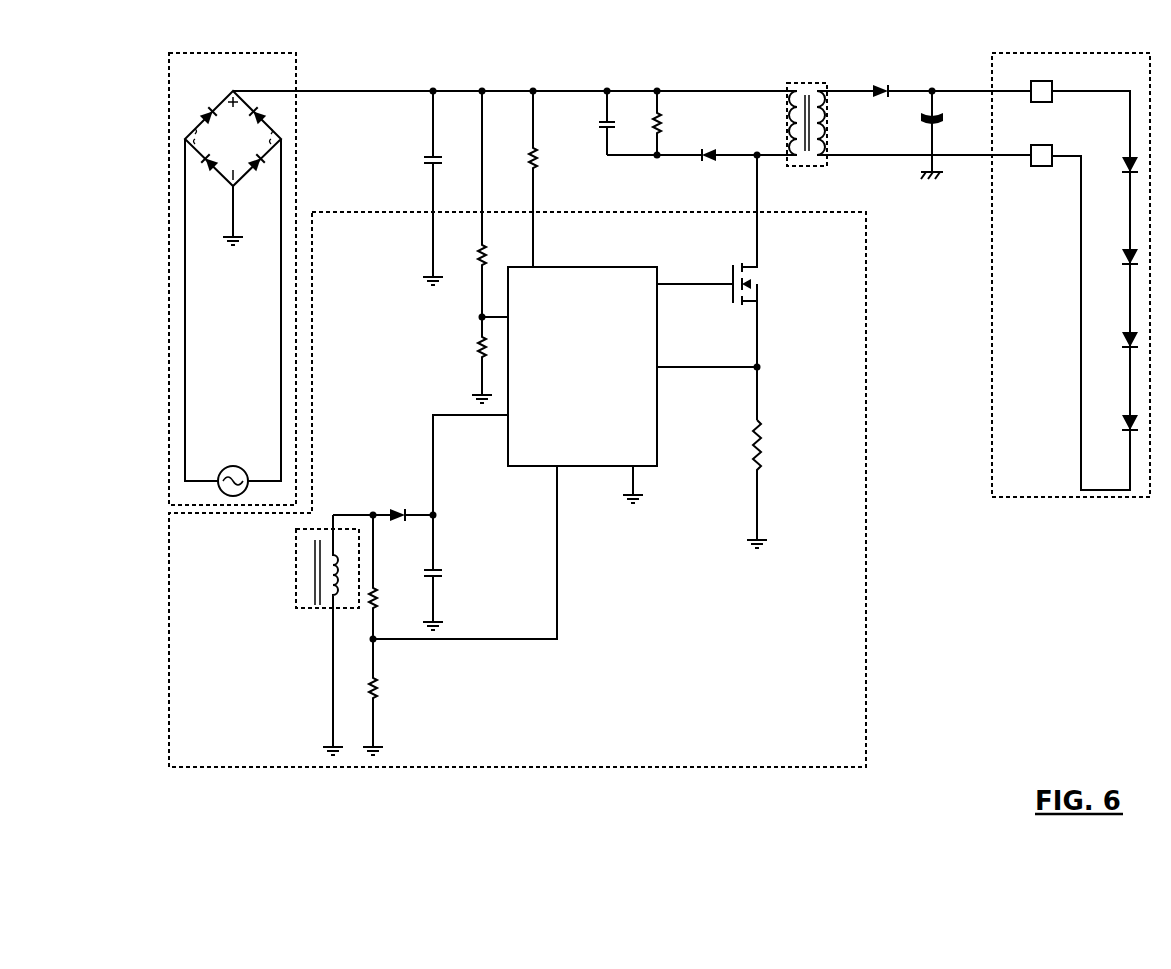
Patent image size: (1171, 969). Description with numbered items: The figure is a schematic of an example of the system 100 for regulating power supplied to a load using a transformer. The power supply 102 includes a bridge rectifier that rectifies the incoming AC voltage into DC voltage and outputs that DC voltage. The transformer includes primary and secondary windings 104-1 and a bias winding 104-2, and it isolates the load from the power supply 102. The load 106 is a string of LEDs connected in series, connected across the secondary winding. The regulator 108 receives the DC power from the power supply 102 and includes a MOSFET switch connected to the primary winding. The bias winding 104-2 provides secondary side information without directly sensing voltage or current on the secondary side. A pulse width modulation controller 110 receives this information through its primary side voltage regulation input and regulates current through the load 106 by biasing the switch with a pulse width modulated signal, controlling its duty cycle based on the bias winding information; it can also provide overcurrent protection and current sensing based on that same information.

The system 100 is at (110, 116).
The power supply 102 is at (241, 53).
The primary and secondary windings 104-1 is at (808, 83).
The bias winding 104-2 is at (296, 573).
The load 106 is at (1081, 53).
The regulator 108 is at (866, 654).
The pulse width modulation controller 110 is at (585, 267).